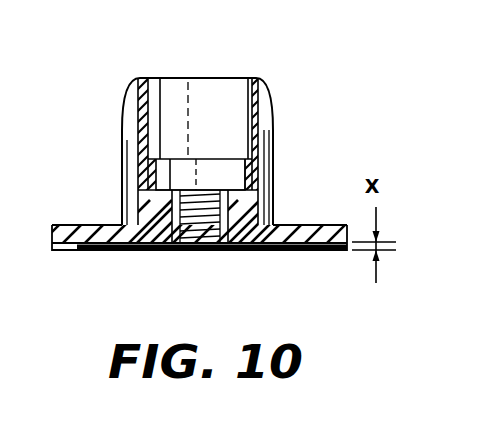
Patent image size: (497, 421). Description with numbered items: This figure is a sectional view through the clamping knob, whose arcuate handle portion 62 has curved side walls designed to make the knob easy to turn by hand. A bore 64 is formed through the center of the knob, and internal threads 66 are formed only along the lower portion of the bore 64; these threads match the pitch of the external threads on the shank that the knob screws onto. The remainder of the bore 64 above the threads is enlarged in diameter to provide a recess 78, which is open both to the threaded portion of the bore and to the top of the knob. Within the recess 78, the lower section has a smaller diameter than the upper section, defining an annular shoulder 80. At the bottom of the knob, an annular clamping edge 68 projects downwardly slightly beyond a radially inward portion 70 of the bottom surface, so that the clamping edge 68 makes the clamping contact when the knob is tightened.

The handle portion 62 is at (124, 103).
The bore 64 is at (212, 232).
The internal threads 66 is at (181, 229).
The annular clamping edge 68 is at (65, 250).
The radially inward portion of the bottom surface 70 is at (123, 250).
The recess 78 is at (198, 90).
The annular shoulder 80 is at (247, 157).